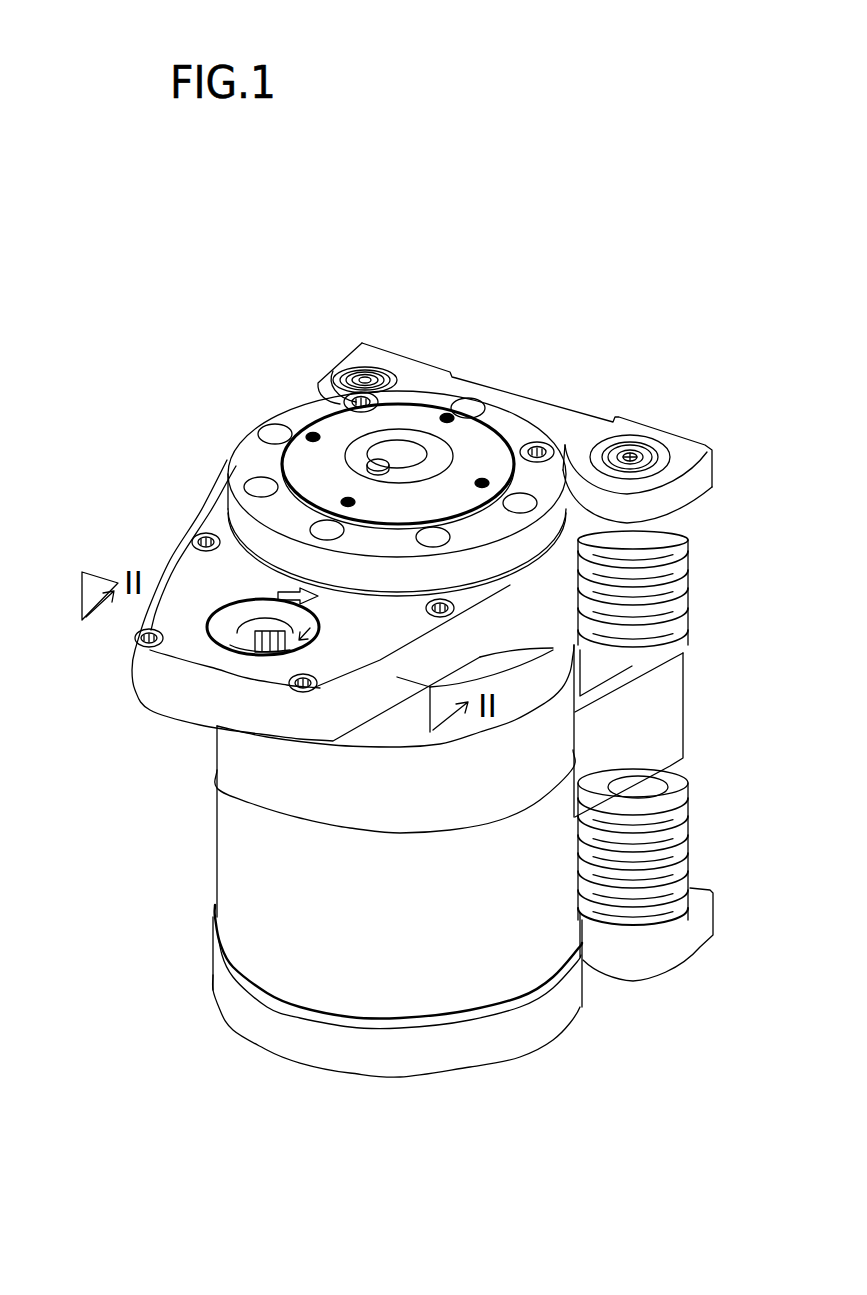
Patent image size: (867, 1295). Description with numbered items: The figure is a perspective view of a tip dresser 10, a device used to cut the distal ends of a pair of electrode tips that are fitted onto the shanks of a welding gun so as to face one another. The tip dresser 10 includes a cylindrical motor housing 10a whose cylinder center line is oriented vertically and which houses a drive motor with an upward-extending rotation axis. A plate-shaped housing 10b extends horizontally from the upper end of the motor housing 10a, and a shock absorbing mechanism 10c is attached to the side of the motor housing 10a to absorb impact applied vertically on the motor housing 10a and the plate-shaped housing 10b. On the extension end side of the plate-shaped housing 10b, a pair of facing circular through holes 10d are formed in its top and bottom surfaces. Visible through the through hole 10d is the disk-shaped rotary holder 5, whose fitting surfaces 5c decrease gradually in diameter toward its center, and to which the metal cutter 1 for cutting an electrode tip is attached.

The cutter 1 is at (380, 630).
The rotary holder 5 is at (205, 656).
The fitting surfaces 5c is at (240, 635).
The tip dresser 10 is at (628, 338).
The motor housing 10a is at (485, 955).
The plate-shaped housing 10b is at (178, 543).
The shock absorbing mechanism 10c is at (688, 575).
The circular through holes 10d is at (250, 617).